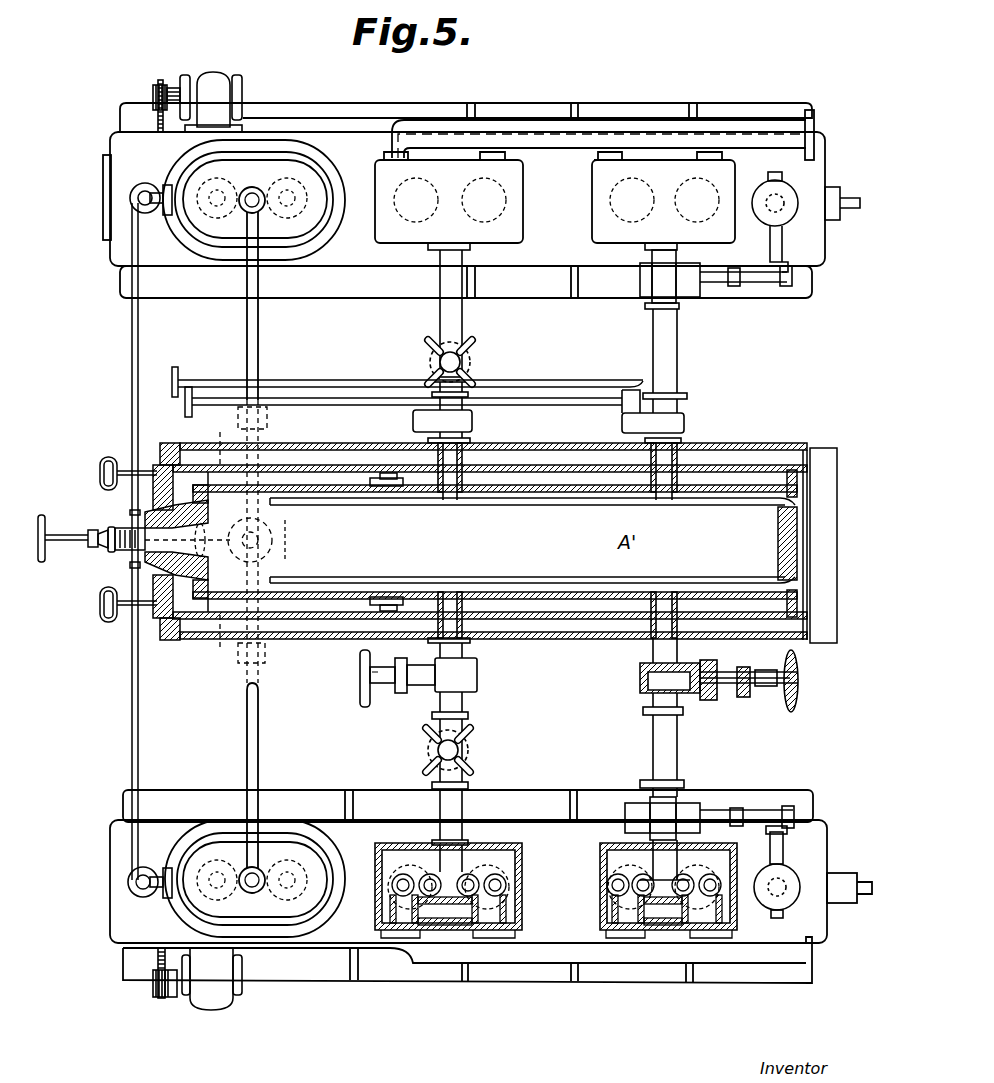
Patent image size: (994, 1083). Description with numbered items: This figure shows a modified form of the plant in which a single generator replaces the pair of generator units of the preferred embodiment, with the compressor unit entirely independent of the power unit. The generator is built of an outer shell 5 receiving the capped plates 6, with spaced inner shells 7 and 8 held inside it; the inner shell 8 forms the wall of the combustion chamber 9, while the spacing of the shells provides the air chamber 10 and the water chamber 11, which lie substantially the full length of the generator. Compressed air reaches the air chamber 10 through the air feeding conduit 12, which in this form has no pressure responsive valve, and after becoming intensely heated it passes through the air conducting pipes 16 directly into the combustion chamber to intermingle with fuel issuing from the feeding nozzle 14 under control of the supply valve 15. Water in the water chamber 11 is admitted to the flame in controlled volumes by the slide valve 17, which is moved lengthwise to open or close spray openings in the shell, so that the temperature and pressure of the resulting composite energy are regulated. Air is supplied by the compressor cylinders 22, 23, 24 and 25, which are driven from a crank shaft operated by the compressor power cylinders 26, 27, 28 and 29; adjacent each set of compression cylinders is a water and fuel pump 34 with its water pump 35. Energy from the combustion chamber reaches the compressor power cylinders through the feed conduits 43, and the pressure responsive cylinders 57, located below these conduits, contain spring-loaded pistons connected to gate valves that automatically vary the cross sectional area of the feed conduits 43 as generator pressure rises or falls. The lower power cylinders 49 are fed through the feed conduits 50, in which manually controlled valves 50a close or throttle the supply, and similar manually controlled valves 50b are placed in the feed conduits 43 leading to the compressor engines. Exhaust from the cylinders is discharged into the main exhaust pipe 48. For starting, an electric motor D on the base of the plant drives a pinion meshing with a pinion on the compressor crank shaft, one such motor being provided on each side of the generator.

The electric motor D is at (222, 75).
The outer shell 5 is at (718, 455).
The capped plates 6 is at (165, 445).
The inner shell 7 is at (526, 470).
The inner shell 8 is at (742, 482).
The combustion chamber 9 is at (532, 540).
The air chamber 10 is at (298, 461).
The water chamber 11 is at (332, 479).
The air feeding conduit 12 is at (245, 723).
The feeding nozzle 14 is at (133, 546).
The supply valve 15 is at (93, 531).
The air conducting pipes 16 is at (716, 586).
The slide valve 17 is at (386, 493).
The compressor cylinder 22 is at (220, 860).
The compressor cylinder 23 is at (286, 860).
The compressor cylinder 24 is at (217, 216).
The compressor cylinder 25 is at (291, 216).
The compressor power cylinder 26 is at (400, 868).
The compressor power cylinder 27 is at (496, 862).
The compressor power cylinder 28 is at (449, 201).
The compressor power cylinder 29 is at (485, 200).
The water and fuel pump 34 is at (150, 870).
The water pump 35 is at (141, 898).
The feed conduit 43 is at (440, 326).
The exhaust pipe 48 is at (552, 963).
The power cylinders 49 is at (730, 862).
The feed conduit 50 is at (670, 378).
The manually controlled valve 50a is at (668, 682).
The manually controlled valve 50b is at (422, 694).
The pressure responsive cylinder 57 is at (472, 362).